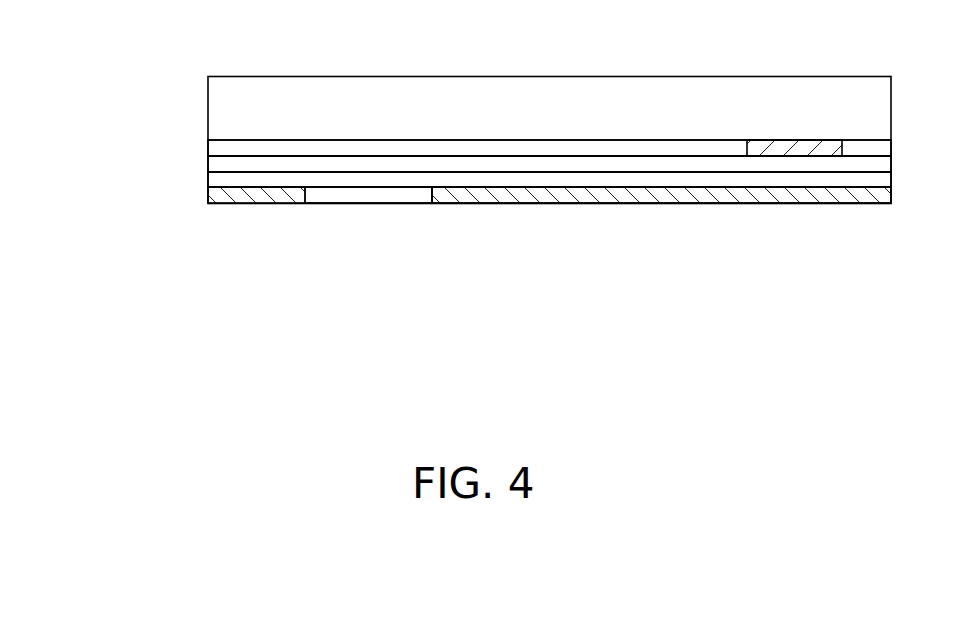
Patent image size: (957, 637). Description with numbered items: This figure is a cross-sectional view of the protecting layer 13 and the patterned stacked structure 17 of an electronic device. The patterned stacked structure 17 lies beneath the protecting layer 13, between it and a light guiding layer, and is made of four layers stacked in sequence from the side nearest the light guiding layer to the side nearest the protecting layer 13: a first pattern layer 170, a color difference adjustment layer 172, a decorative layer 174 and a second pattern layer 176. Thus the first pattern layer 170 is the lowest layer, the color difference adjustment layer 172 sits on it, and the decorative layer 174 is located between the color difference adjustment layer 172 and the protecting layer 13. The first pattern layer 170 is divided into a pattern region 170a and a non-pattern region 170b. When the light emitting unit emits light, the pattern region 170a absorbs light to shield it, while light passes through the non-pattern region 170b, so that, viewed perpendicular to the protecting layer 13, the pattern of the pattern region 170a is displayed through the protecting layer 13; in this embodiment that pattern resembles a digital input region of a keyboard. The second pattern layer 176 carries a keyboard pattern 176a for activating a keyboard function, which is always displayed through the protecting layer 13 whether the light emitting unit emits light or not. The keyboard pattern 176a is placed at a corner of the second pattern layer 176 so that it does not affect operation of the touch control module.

The protecting layer 13 is at (222, 106).
The patterned stacked structure 17 is at (119, 125).
The second pattern layer 176 is at (209, 147).
The keyboard pattern 176a is at (786, 147).
The decorative layer 174 is at (209, 165).
The color difference adjustment layer 172 is at (209, 178).
The first pattern layer 170 is at (210, 195).
The pattern region 170a is at (550, 198).
The non-pattern region 170b is at (367, 198).